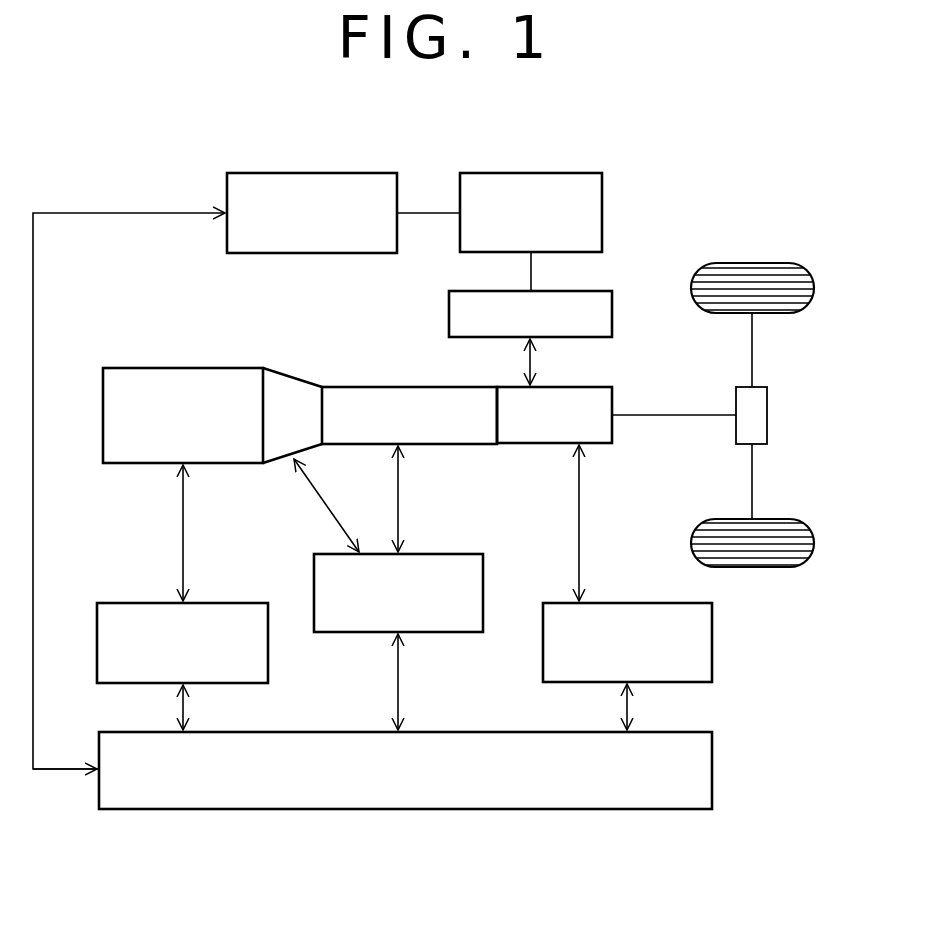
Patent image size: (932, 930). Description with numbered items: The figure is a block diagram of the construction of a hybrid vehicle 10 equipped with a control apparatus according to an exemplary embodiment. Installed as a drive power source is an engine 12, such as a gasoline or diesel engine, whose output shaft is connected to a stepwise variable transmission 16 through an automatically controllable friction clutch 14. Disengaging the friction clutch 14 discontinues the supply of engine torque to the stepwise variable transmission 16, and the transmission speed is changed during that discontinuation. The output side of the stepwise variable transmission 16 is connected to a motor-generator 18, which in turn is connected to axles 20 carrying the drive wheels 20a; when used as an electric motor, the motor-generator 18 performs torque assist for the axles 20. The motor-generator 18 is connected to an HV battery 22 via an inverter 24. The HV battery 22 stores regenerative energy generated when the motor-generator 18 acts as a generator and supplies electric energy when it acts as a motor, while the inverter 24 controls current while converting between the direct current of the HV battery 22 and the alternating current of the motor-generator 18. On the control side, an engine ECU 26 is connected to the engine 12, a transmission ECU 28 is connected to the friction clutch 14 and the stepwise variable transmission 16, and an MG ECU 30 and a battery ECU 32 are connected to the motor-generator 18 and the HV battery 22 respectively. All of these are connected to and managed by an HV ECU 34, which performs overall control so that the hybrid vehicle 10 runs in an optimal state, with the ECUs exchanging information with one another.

The hybrid vehicle 10 is at (823, 193).
The engine 12 is at (197, 368).
The friction clutch 14 is at (292, 377).
The stepwise variable transmission 16 is at (380, 387).
The motor-generator 18 is at (582, 387).
The axles 20 is at (753, 478).
The drive wheels 20a is at (780, 313).
The HV battery 22 is at (551, 173).
The inverter 24 is at (613, 300).
The engine ECU 26 is at (219, 603).
The transmission ECU 28 is at (450, 554).
The MG ECU 30 is at (713, 645).
The battery ECU 32 is at (334, 173).
The HV ECU 34 is at (713, 773).